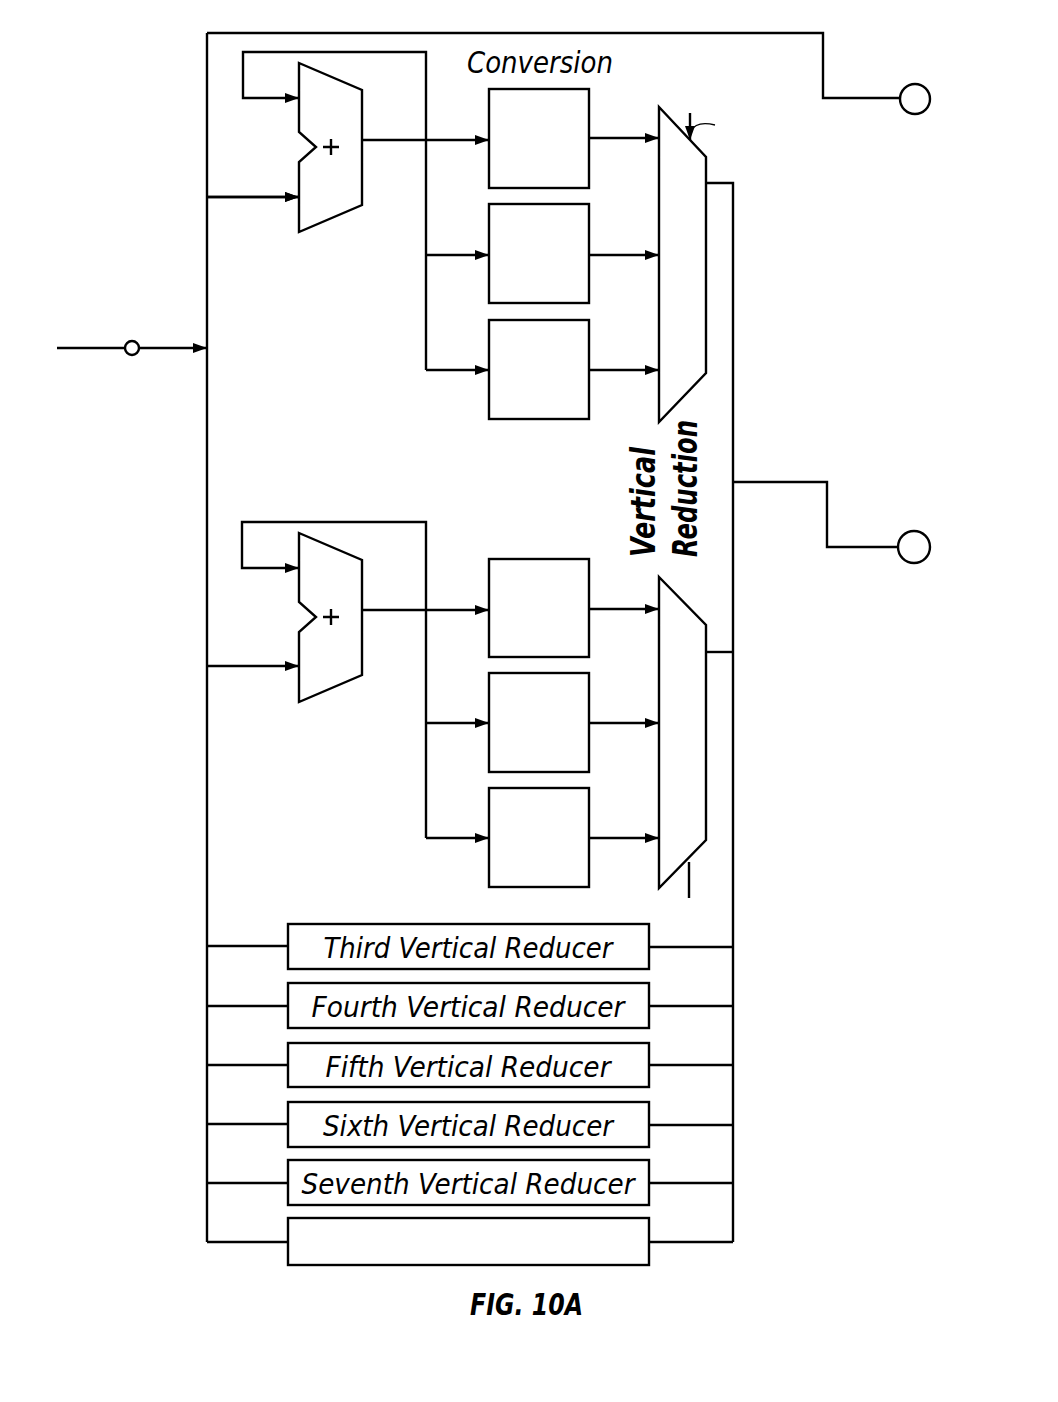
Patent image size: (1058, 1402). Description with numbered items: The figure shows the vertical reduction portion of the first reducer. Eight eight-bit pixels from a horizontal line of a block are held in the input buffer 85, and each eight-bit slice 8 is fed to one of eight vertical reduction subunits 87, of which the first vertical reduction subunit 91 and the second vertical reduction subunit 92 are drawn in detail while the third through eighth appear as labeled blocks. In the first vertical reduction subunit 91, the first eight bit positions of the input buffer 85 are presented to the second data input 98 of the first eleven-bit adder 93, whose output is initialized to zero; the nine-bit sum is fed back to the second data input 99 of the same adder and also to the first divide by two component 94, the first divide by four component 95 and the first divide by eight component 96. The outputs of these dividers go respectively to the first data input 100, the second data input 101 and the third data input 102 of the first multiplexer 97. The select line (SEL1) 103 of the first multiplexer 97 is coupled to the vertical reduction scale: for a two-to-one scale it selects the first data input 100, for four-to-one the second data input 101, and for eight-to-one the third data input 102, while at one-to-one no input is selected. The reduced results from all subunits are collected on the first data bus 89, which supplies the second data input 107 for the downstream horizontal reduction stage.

The 8-bit input bus 8 is at (260, 197).
The input buffer 85 is at (60, 292).
The vertical reduction subunit 87 is at (378, 1266).
The first data bus 89 is at (732, 957).
The first vertical reduction subunit 91 is at (316, 243).
The second vertical reduction subunit 92 is at (345, 725).
The first eleven-bit adder 93 is at (327, 220).
The first divide by two component 94 is at (489, 120).
The first divide by four component 95 is at (489, 236).
The first divide by eight component 96 is at (489, 338).
The first multiplexer 97 is at (668, 110).
The second data input 98 is at (297, 210).
The second data input 99 is at (297, 117).
The first data input 100 is at (638, 134).
The second data input 101 is at (650, 250).
The third data input 102 is at (647, 362).
The select line (SEL1) 103 is at (760, 115).
The second data input 107 is at (760, 481).